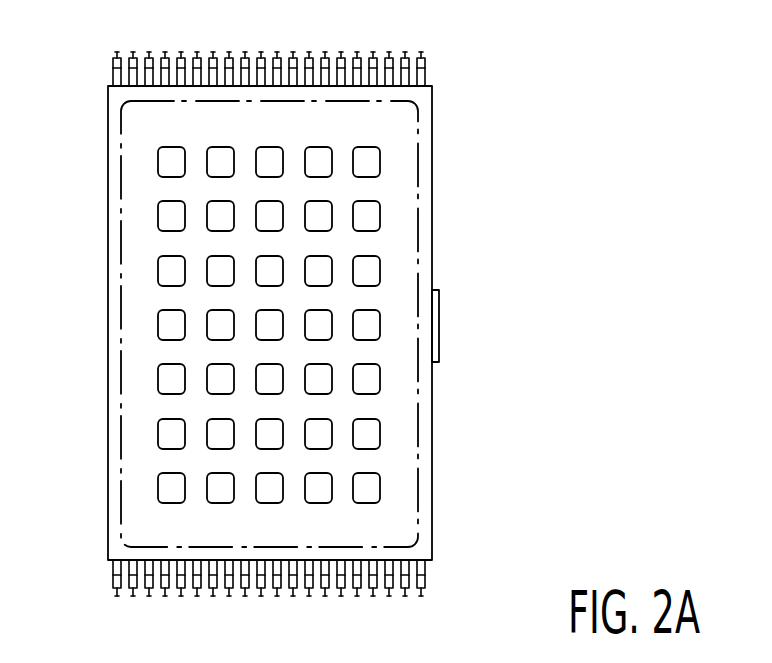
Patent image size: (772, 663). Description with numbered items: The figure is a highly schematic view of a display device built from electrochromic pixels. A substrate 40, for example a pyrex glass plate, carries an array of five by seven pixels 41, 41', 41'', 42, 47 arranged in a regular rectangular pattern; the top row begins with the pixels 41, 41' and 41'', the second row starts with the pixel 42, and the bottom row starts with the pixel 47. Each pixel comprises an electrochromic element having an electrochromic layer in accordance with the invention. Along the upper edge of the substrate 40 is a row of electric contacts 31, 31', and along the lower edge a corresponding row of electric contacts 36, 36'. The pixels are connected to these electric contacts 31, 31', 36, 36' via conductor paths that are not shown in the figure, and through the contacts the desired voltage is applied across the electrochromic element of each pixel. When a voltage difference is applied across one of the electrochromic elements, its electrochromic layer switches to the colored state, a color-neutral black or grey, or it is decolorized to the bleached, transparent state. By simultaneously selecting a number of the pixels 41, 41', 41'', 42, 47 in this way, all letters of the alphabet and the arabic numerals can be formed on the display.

The electric contact 31 is at (106, 45).
The electric contact 31' is at (148, 45).
The electric contact 36 is at (106, 607).
The electric contact 36' is at (148, 607).
The substrate 40 is at (425, 474).
The pixel 41 is at (118, 170).
The pixel 41' is at (138, 144).
The pixel 41'' is at (376, 144).
The pixel 42 is at (166, 222).
The pixel 47 is at (166, 487).